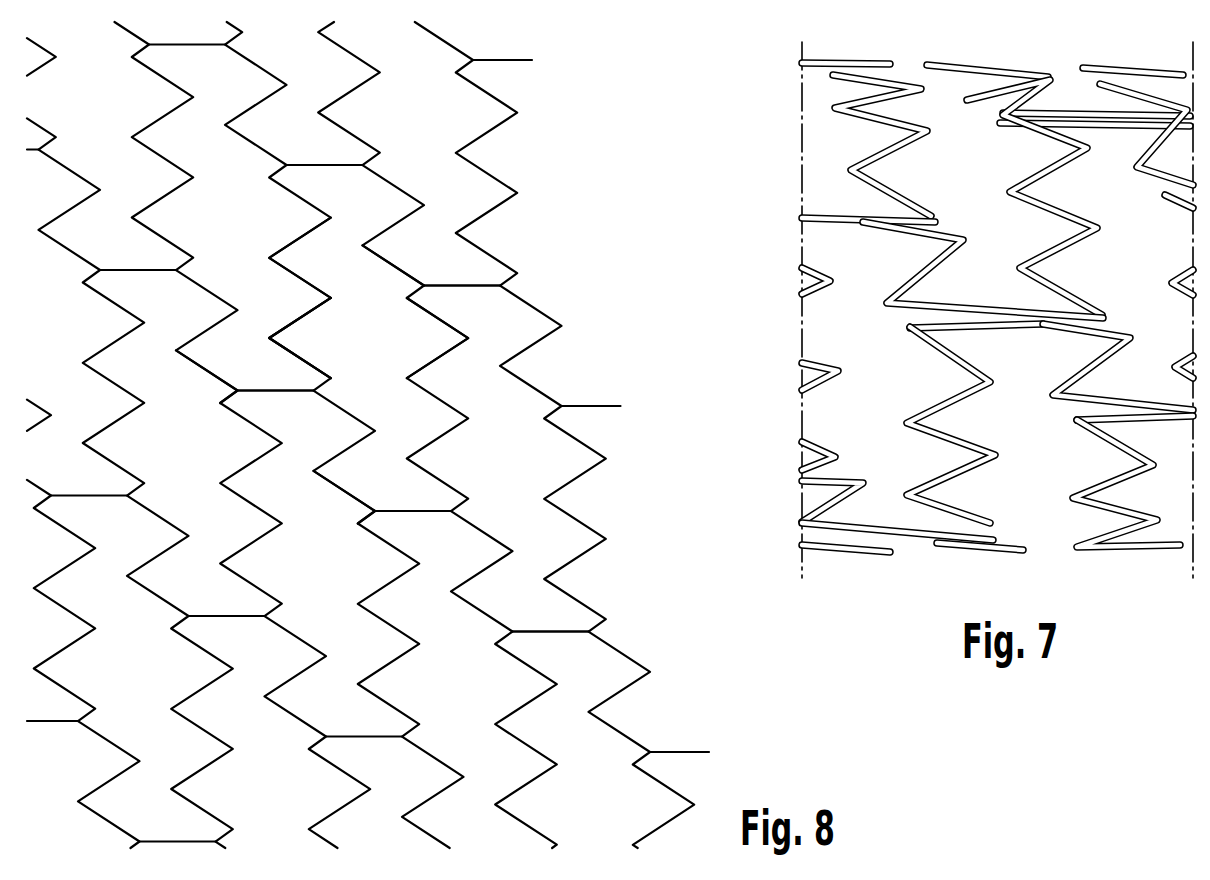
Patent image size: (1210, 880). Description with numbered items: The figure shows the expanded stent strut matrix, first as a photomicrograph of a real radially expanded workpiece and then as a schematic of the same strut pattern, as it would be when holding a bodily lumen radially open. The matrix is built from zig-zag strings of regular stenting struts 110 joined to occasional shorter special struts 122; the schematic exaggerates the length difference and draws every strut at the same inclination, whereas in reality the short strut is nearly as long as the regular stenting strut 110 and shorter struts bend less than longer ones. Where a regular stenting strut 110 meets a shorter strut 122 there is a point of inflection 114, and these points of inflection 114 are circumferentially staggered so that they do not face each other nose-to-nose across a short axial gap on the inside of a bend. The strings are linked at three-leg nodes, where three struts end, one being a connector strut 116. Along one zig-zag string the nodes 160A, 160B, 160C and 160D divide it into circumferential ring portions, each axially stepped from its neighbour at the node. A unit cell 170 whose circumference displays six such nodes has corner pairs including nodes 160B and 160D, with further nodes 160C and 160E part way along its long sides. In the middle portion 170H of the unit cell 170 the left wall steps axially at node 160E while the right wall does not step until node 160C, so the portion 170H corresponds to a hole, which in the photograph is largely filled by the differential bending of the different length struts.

The regular stenting strut 110 is at (436, 362).
The point of inflection 114 is at (240, 308).
The connector strut 116 is at (428, 513).
The special short strut 122 is at (375, 512).
The three leg node 160A is at (514, 633).
The three leg node 160B is at (452, 512).
The three leg node 160C is at (426, 286).
The three leg node 160D is at (365, 165).
The three leg node 160E is at (314, 392).
The unit cell 170 is at (386, 300).
The middle portion of the unit cell 170H is at (376, 352).